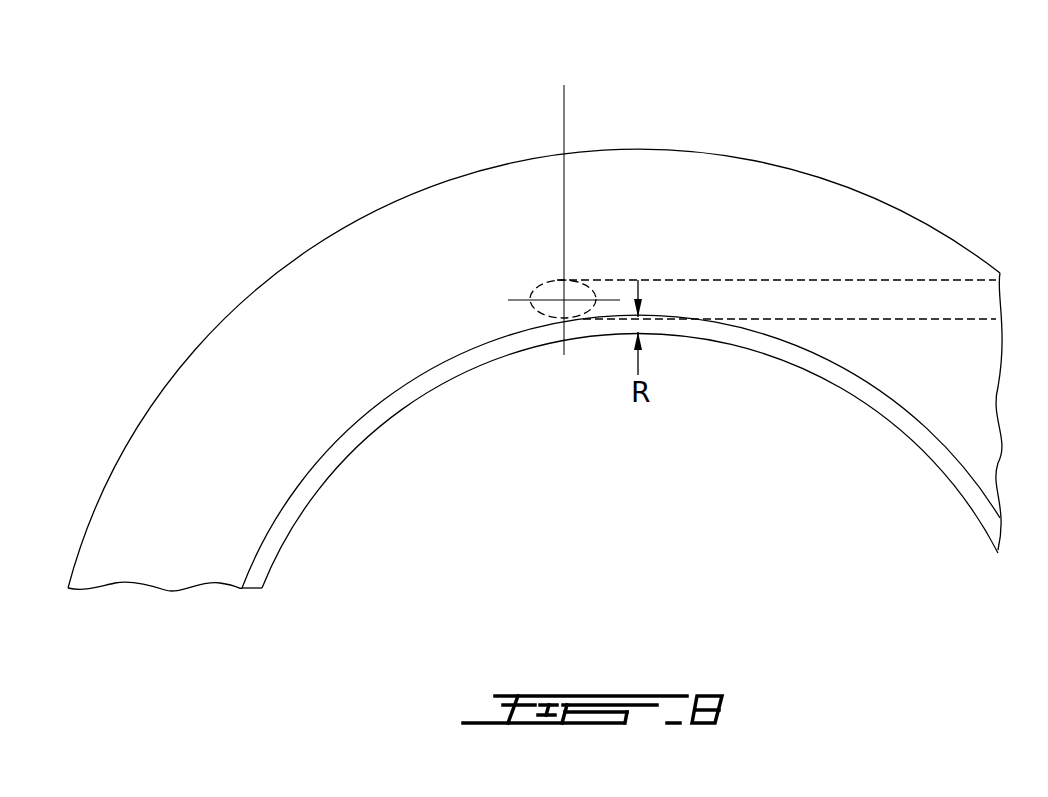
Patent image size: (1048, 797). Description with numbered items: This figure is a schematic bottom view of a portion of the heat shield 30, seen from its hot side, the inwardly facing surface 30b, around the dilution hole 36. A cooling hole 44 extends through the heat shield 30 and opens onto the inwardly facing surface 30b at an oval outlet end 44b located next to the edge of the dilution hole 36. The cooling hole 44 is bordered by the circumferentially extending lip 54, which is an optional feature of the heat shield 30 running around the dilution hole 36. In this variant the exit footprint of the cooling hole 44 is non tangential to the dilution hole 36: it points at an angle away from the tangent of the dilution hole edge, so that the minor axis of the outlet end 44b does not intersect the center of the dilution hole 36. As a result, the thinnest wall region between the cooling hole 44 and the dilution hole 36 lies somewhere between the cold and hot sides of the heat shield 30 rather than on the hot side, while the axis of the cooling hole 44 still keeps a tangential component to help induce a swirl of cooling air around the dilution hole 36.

The heat shield 30 is at (740, 182).
The inwardly facing surface 30b is at (318, 380).
The dilution hole 36 is at (723, 485).
The cooling hole 44 is at (848, 298).
The outlet end 44b is at (552, 296).
The lip 54 is at (382, 410).